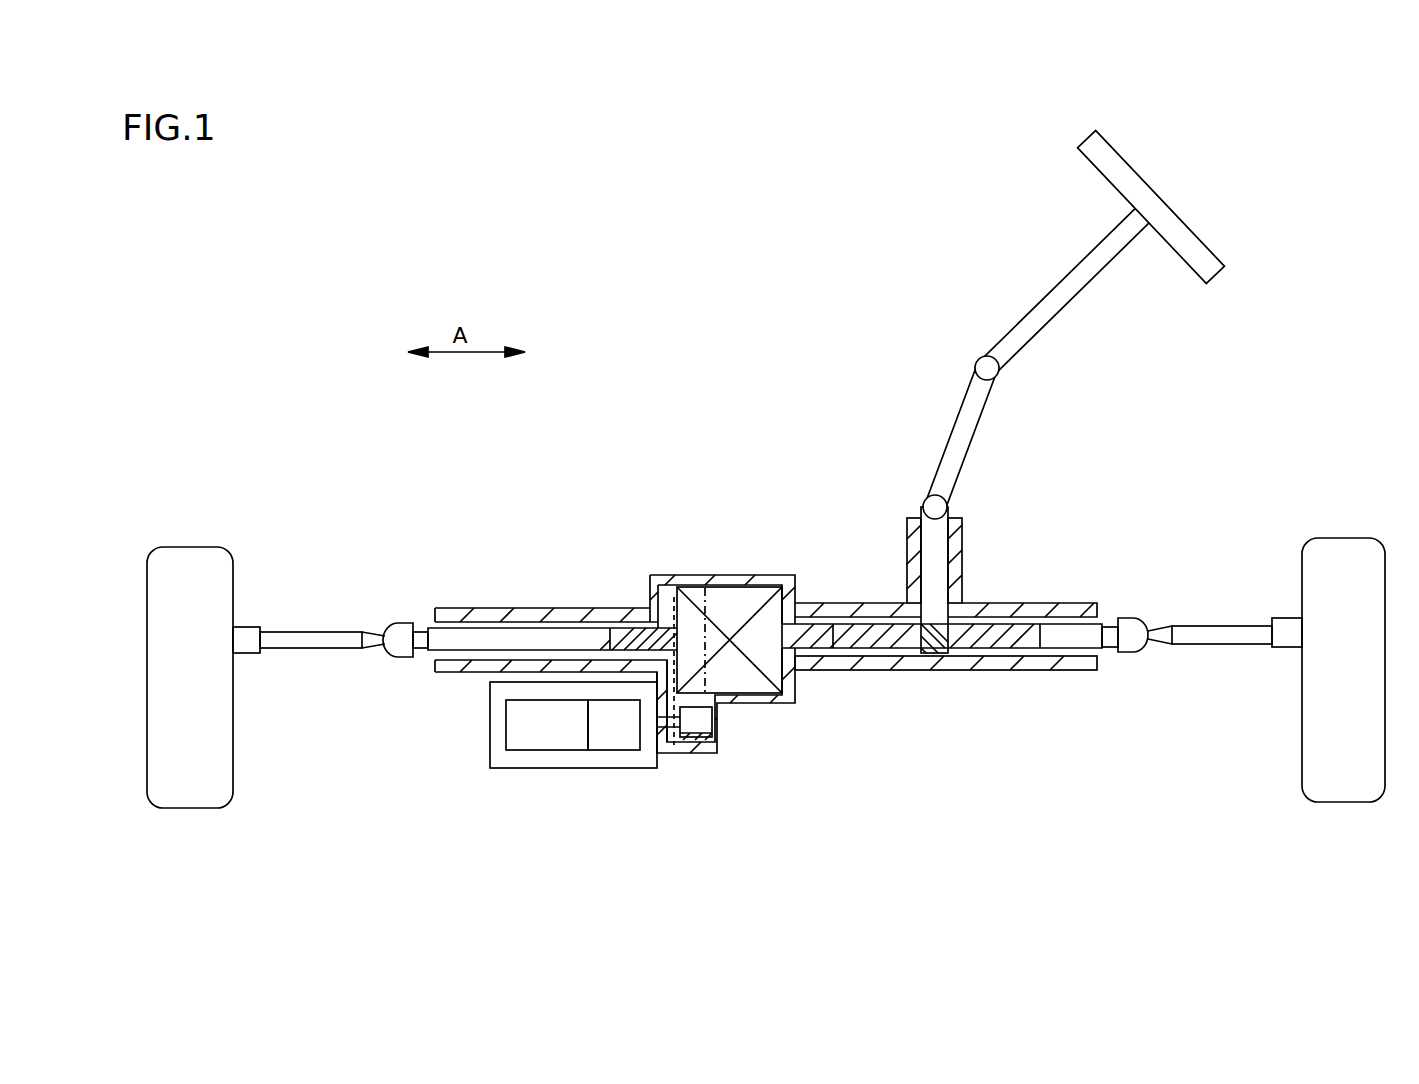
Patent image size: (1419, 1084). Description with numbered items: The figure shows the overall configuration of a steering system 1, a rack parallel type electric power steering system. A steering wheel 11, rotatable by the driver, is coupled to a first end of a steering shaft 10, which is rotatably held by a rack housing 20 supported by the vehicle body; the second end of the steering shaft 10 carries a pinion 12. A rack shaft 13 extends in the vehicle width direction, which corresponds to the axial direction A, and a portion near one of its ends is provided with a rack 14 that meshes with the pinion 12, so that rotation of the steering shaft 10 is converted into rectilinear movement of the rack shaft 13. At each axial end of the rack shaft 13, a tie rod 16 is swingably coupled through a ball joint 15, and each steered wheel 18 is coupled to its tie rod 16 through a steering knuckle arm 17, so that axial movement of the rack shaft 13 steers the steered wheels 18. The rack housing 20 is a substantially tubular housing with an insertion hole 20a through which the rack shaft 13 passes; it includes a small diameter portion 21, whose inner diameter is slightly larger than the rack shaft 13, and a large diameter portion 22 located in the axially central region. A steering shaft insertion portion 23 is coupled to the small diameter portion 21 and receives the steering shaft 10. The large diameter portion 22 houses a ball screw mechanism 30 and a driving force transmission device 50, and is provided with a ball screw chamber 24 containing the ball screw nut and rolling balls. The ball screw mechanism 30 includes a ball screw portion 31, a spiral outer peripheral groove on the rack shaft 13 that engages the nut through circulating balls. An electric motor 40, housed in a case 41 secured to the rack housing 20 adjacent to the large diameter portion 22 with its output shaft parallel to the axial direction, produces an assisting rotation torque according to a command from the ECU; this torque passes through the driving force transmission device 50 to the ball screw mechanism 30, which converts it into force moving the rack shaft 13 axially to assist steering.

The steering system 1 is at (813, 424).
The steering shaft 10 is at (935, 552).
The steering wheel 11 is at (1185, 232).
The pinion 12 is at (925, 655).
The rack shaft 13 is at (1077, 636).
The rack 14 is at (868, 640).
The ball joint 15 is at (402, 658).
The tie rod 16 is at (310, 650).
The steering knuckle arm 17 is at (247, 655).
The steered wheel 18 is at (183, 570).
The rack housing 20 is at (550, 612).
The insertion hole 20a is at (463, 640).
The small diameter portion 21 is at (830, 604).
The large diameter portion 22 is at (717, 585).
The steering shaft insertion portion 23 is at (955, 587).
The ball screw chamber 24 is at (674, 597).
The ball screw mechanism 30 is at (755, 710).
The ball screw portion 31 is at (642, 607).
The electric motor 40 is at (625, 750).
The case 41 is at (527, 770).
The driving force transmission device 50 is at (693, 742).